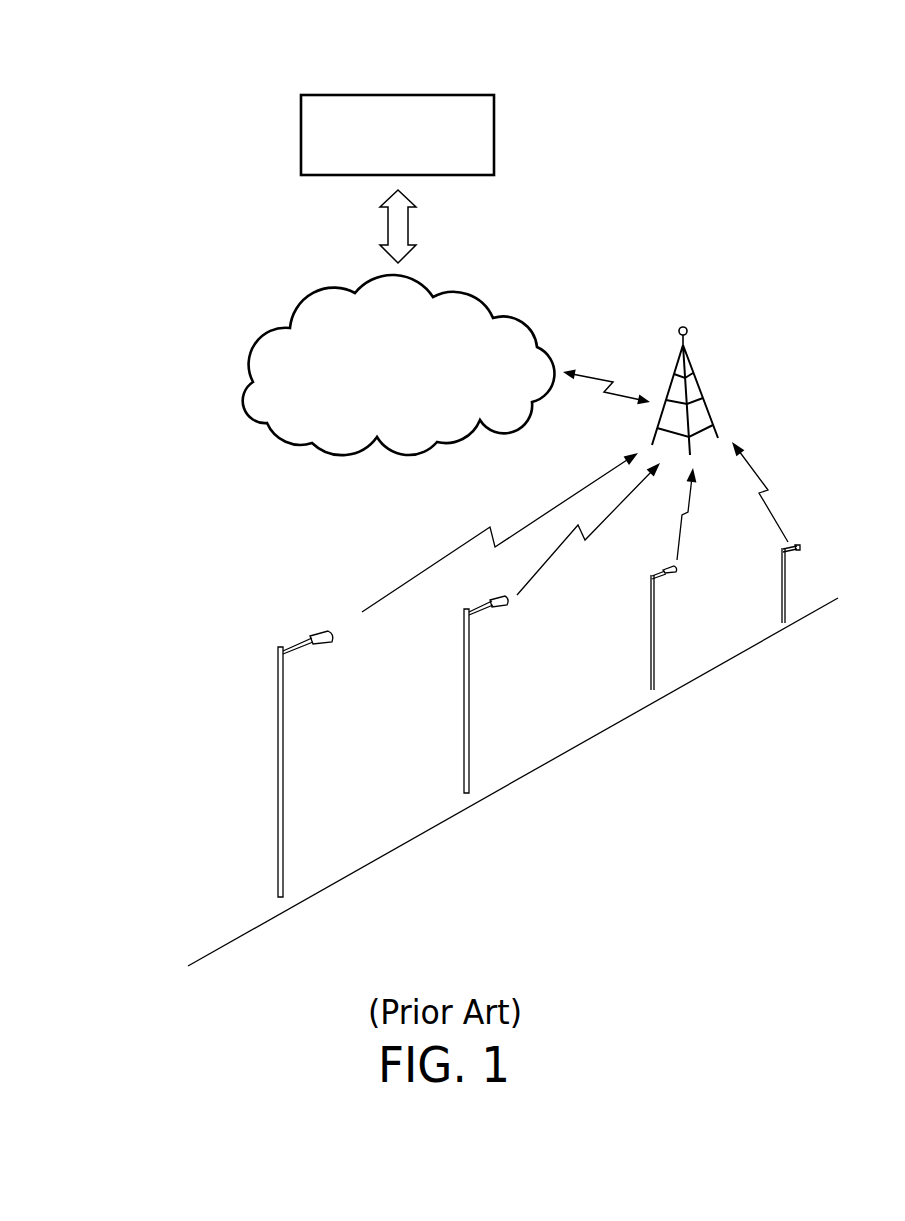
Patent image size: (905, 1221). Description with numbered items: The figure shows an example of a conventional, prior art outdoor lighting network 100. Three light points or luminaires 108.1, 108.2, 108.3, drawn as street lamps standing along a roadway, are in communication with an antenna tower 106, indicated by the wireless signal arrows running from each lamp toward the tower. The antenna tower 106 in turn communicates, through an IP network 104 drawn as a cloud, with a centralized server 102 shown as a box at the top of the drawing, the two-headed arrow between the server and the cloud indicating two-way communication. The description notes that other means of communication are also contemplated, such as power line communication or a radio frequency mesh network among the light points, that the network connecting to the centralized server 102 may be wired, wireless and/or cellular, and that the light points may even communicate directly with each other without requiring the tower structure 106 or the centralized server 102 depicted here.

The outdoor lighting network 100 is at (127, 103).
The centralized server 102 is at (497, 133).
The IP network 104 is at (247, 363).
The antenna tower 106 is at (692, 360).
The light point 108.1 is at (315, 764).
The light point 108.2 is at (501, 694).
The light point 108.3 is at (686, 628).